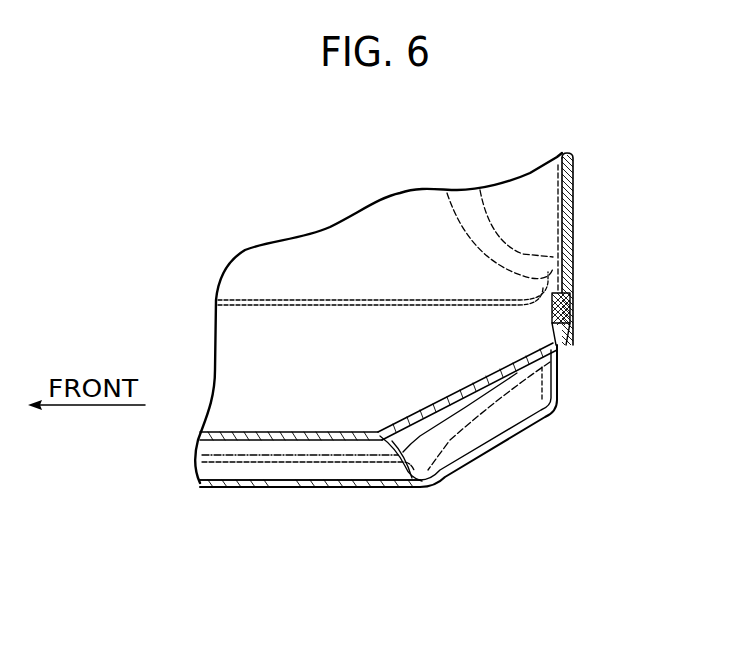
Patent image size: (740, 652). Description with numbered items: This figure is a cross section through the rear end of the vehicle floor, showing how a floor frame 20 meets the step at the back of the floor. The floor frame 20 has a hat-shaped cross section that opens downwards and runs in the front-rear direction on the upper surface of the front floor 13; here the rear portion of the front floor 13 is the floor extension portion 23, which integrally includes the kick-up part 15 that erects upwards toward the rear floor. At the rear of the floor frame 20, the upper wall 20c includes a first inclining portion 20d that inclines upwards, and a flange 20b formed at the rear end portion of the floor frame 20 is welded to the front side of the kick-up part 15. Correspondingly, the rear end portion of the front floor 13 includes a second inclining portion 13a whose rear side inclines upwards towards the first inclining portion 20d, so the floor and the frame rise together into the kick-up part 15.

The floor frame 20 is at (260, 430).
The kick-up part 15 is at (574, 220).
The flange 20b is at (550, 304).
The upper wall 20c is at (307, 432).
The first inclining portion 20d is at (457, 387).
The second inclining portion 13a is at (480, 443).
The front floor 13 is at (283, 488).
The floor extension portion 23 is at (310, 467).